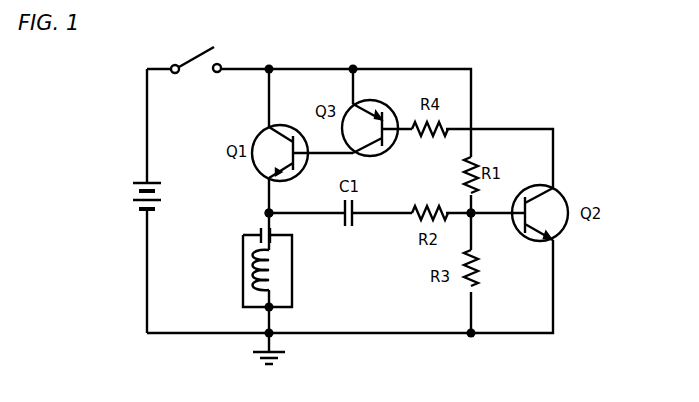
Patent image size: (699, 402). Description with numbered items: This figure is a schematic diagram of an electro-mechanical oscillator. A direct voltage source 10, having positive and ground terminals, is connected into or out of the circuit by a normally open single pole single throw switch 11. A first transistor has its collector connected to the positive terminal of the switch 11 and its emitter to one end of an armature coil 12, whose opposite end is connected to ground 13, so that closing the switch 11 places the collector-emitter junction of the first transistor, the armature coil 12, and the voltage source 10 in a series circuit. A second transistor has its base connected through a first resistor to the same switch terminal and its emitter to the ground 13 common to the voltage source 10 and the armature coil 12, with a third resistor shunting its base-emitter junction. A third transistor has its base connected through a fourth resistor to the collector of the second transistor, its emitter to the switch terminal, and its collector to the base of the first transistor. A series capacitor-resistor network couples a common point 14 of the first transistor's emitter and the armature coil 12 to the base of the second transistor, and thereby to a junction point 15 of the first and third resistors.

The direct voltage source 10 is at (131, 193).
The normally open single pole single throw switch 11 is at (201, 47).
The armature coil 12 is at (276, 268).
The ground 13 is at (260, 338).
The common point 14 is at (264, 210).
The junction point 15 is at (478, 218).